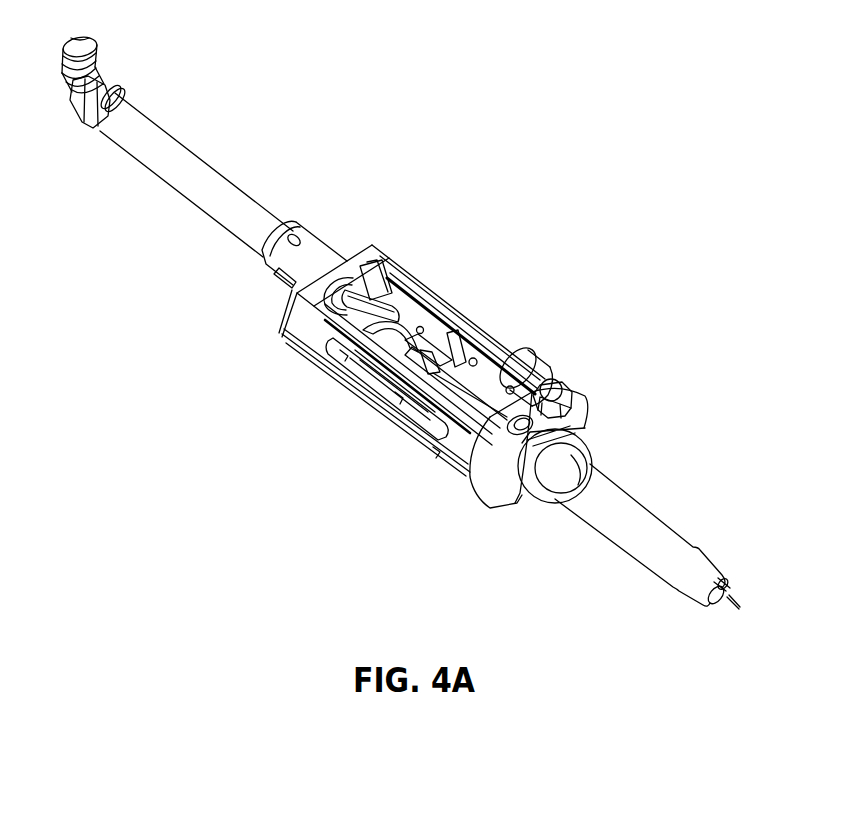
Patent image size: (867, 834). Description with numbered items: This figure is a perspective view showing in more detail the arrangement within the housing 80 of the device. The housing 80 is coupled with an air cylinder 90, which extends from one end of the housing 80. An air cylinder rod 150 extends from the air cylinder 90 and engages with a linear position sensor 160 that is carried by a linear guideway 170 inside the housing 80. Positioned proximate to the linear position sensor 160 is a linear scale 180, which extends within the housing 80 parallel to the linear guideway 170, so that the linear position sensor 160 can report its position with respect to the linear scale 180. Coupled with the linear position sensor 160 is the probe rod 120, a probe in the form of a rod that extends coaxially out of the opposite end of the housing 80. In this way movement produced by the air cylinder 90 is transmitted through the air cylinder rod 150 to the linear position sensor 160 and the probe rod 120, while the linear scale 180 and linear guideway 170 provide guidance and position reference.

The air cylinder 90 is at (214, 168).
The housing 80 is at (287, 337).
The air cylinder rod 150 is at (362, 305).
The linear position sensor 160 is at (363, 377).
The linear scale 180 is at (421, 420).
The linear guideway 170 is at (476, 343).
The probe rod 120 is at (453, 372).